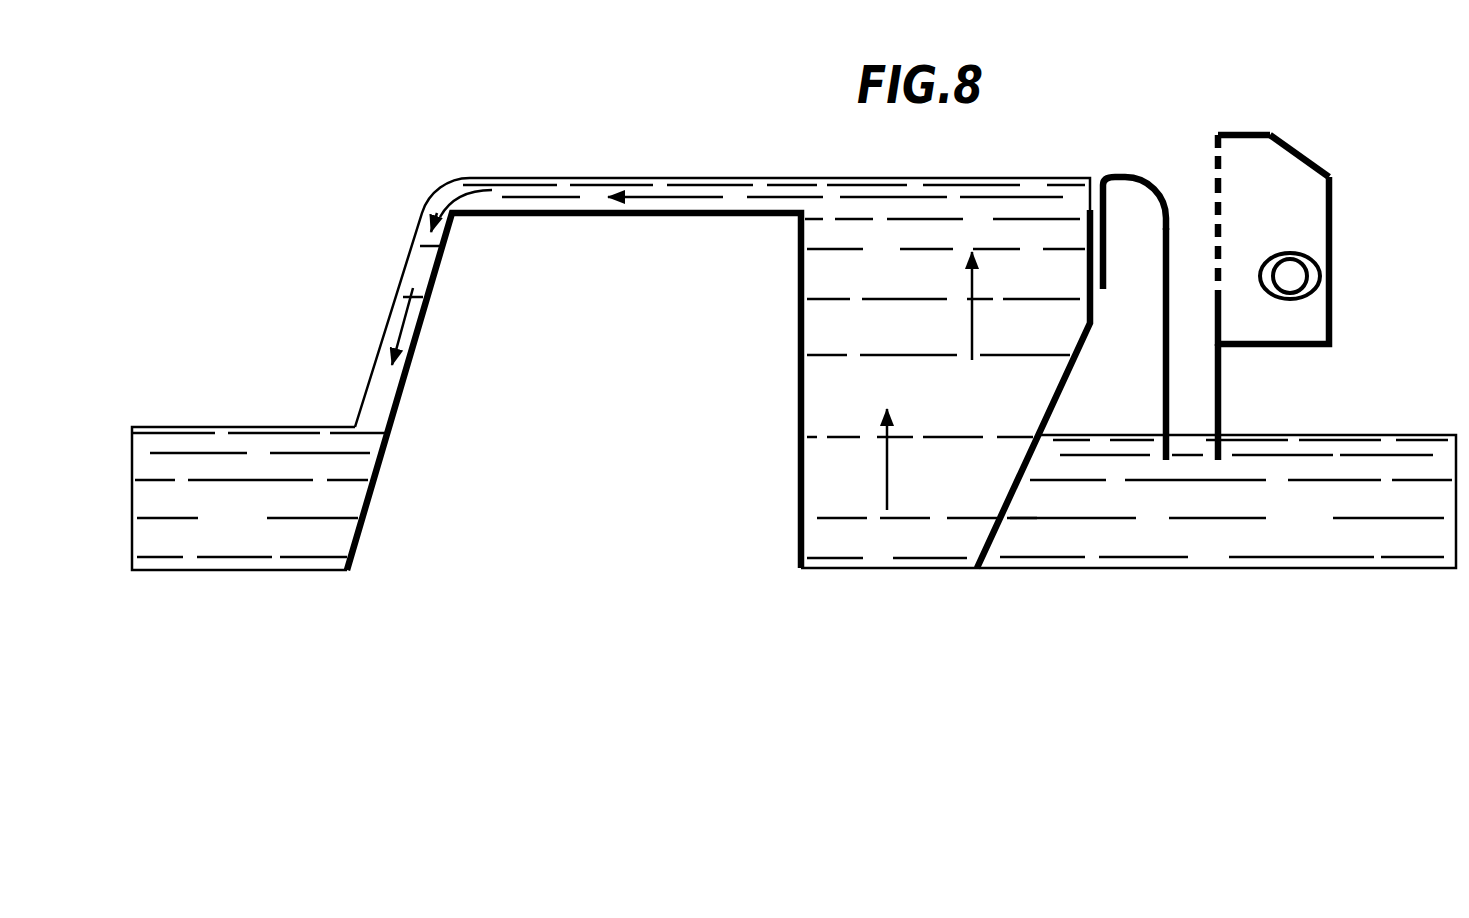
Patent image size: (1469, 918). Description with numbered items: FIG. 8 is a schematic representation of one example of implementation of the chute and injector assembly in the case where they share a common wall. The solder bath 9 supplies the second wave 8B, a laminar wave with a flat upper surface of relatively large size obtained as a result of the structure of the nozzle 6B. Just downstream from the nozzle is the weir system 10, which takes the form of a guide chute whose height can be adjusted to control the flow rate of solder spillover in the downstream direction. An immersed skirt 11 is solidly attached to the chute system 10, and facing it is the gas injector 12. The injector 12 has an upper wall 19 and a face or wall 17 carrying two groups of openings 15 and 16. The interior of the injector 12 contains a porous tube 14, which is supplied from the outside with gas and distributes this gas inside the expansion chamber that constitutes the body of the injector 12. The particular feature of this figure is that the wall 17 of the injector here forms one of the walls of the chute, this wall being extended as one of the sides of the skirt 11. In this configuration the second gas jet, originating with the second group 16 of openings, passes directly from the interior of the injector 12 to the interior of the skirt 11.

The second wave 8B is at (797, 173).
The nozzle 6B is at (400, 433).
The solder bath 9 is at (240, 523).
The weir system 10 is at (1130, 170).
The immersed skirt 11 is at (1154, 370).
The gas injector 12 is at (1337, 197).
The upper wall 19 is at (1293, 148).
The first group of openings 15 is at (1228, 168).
The wall 17 is at (1230, 244).
The second group of openings 16 is at (1225, 293).
The porous tube 14 is at (1312, 255).